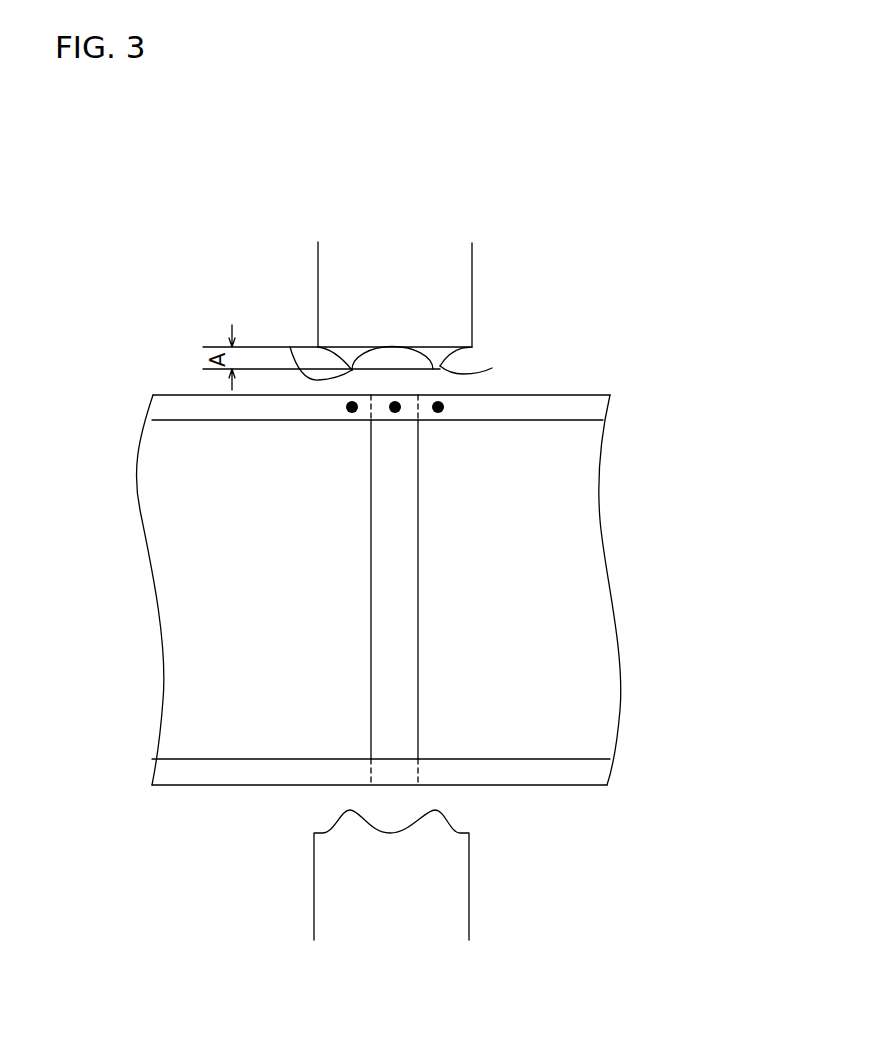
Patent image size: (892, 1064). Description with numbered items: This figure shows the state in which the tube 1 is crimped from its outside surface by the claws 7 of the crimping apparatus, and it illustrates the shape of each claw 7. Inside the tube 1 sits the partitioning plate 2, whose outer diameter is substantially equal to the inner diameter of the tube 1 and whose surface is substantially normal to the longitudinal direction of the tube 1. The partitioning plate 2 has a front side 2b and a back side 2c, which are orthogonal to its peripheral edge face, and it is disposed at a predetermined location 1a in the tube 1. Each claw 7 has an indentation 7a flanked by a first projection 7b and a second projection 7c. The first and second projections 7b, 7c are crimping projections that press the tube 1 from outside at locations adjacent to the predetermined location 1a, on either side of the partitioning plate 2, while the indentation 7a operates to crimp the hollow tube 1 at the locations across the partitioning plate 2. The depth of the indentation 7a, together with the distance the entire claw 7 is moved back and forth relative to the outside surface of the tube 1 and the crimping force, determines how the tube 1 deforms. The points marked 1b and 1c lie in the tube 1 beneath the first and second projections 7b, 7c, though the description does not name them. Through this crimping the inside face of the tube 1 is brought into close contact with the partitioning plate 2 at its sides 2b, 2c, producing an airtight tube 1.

The tube 1 is at (563, 406).
The predetermined location 1a is at (395, 413).
The left projection of upper plate 1b is at (352, 413).
The right projection of upper plate 1c is at (438, 413).
The partitioning plate 2 is at (470, 590).
The front side 2b is at (371, 675).
The back side 2c is at (406, 619).
The claw 7 is at (445, 282).
The indentation 7a is at (393, 347).
The first projection 7b is at (290, 347).
The second projection 7c is at (492, 368).